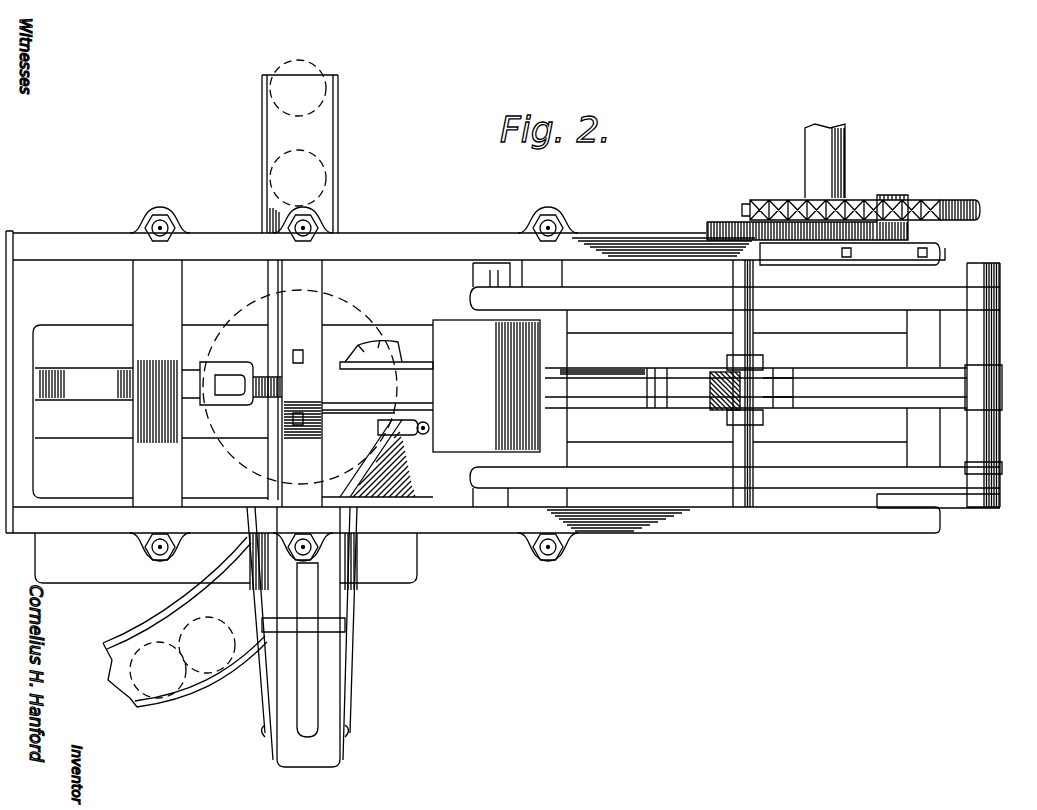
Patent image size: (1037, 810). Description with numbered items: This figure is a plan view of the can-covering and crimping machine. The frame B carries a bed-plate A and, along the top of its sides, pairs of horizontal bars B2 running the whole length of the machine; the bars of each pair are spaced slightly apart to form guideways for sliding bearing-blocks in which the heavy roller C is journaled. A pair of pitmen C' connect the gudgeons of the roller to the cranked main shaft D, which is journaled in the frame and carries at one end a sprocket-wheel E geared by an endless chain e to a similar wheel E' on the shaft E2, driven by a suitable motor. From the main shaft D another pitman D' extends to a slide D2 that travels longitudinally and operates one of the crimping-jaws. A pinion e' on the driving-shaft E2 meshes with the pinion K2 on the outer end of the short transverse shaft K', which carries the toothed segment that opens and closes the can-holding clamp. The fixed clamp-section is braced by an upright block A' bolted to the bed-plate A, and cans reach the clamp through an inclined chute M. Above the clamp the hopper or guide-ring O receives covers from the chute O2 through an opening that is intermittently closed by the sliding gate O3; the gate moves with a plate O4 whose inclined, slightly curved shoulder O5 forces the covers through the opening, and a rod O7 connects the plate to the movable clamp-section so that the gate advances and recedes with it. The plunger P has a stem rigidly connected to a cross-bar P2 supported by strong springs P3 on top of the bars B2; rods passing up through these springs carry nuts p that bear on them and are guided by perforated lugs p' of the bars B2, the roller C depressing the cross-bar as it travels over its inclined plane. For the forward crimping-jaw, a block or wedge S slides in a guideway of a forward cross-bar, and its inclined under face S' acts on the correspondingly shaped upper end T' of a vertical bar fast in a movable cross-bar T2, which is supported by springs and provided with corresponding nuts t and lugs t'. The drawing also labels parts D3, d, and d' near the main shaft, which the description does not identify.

The frame B is at (30, 242).
The horizontal bars B2 is at (626, 244).
The nuts t is at (149, 387).
The lugs t' is at (153, 378).
The nuts p is at (296, 395).
The perforated lugs p' is at (319, 380).
The inclined chute M is at (338, 172).
The bed-plate A is at (150, 400).
The upright block A' is at (117, 372).
The movable cross-bar T2 is at (142, 478).
The block or wedge S is at (226, 374).
The inclined plane S' is at (239, 403).
The upper end of vertical bar T' is at (257, 380).
The plunger P is at (360, 372).
The cross-bar P2 is at (312, 292).
The springs P3 is at (356, 348).
The hopper or guide-ring O is at (310, 722).
The chute O2 is at (345, 702).
The sliding gate O3 is at (290, 440).
The plate O4 is at (420, 494).
The shoulder O5 is at (377, 458).
The rod O7 is at (404, 436).
The roller C is at (486, 386).
The pitmen C' is at (723, 383).
The pinion K2 is at (708, 222).
The transverse shaft K' is at (721, 383).
The sprocket-wheel E is at (953, 199).
The sprocket-wheel E' is at (841, 199).
The driving-shaft E2 is at (806, 152).
The endless chain e is at (858, 208).
The pinion e' is at (850, 245).
The cranked main shaft D is at (948, 354).
The pitman D' is at (756, 377).
The slide D2 is at (825, 408).
The collar D3 is at (755, 365).
The collar d is at (667, 406).
The nut d' is at (718, 408).